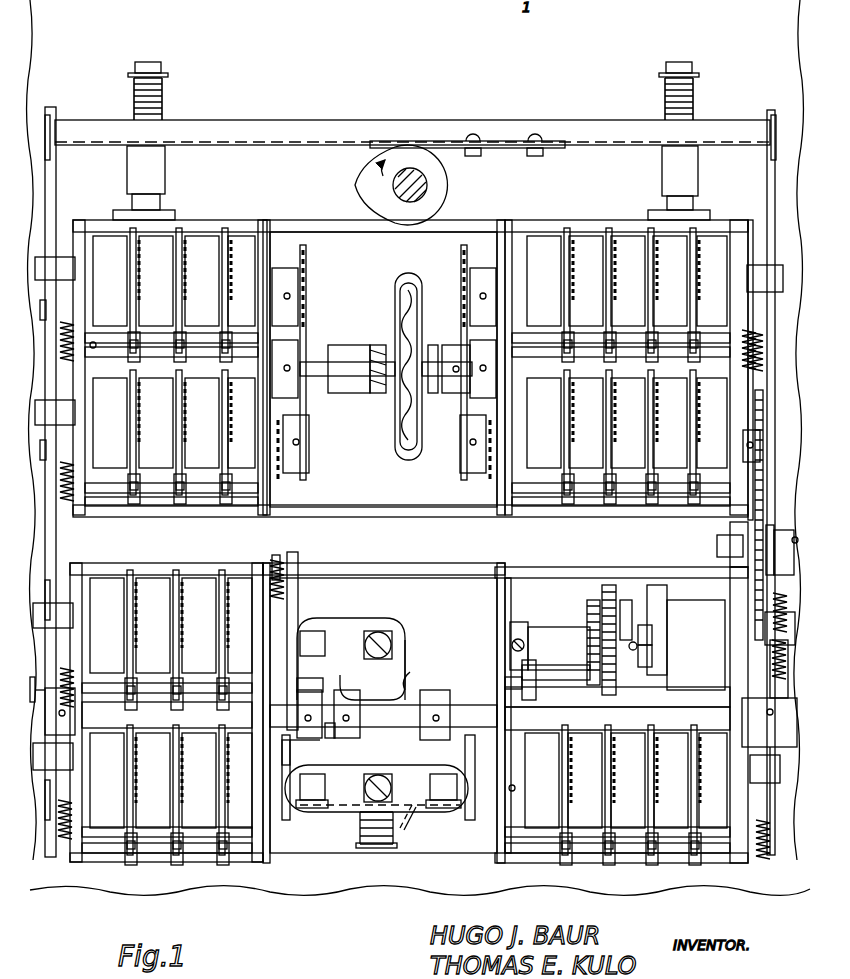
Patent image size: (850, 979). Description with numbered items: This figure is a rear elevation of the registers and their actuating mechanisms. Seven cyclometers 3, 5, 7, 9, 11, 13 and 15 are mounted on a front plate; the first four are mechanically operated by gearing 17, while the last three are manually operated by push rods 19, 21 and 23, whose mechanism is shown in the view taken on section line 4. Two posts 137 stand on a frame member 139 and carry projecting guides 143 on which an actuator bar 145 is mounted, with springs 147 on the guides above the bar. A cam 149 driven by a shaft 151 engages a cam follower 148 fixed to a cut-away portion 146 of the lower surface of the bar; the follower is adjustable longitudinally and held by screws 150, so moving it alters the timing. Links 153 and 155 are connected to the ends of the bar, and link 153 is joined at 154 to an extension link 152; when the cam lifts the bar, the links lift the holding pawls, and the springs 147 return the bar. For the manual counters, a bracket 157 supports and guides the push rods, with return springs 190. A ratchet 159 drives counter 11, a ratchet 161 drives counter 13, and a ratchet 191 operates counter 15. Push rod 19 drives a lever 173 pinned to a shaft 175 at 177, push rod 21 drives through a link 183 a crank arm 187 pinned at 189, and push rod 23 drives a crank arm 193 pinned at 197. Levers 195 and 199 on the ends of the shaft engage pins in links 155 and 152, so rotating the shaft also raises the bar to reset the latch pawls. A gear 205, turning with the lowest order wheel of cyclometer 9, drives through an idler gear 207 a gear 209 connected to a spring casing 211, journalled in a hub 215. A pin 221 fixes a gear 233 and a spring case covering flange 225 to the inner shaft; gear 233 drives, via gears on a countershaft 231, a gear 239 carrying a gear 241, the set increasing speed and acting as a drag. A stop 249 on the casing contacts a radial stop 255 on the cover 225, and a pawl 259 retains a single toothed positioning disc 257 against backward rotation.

The cyclometer 3 is at (248, 258).
The cyclometer 5 is at (246, 470).
The cyclometer 7 is at (530, 250).
The cyclometer 9 is at (500, 482).
The cyclometer 11 is at (142, 588).
The cyclometer 13 is at (155, 822).
The cyclometer 15 is at (545, 850).
The gearing 17 is at (465, 267).
The push rod 19 is at (316, 646).
The push rod 21 is at (316, 789).
The push rod 23 is at (442, 790).
The section line 4- 4 is at (413, 628).
The posts 137 is at (165, 174).
The frame member 139 is at (268, 222).
The projecting guides 143 is at (168, 104).
The actuator bar 145 is at (312, 125).
The cut-away portion 146 is at (397, 140).
The springs 147 is at (168, 85).
The cam follower 148 is at (447, 141).
The cam 149 is at (436, 181).
The screws 150 is at (478, 141).
The shaft 151 is at (426, 196).
The extension link 152 is at (791, 535).
The link 153 is at (767, 180).
The pivot connection 154 is at (808, 522).
The link 155 is at (54, 186).
The bracket 157 is at (395, 667).
The ratchet 159 is at (296, 612).
The ratchet 161 is at (290, 832).
The lever 173 is at (292, 689).
The shaft 175 is at (167, 715).
The pin 177 is at (316, 706).
The link 183 is at (301, 748).
The crank arm 187 is at (337, 725).
The pin 189 is at (354, 706).
The springs 190 is at (395, 830).
The ratchet 191 is at (464, 832).
The crank arm 193 is at (422, 677).
The lever 195 is at (45, 719).
The pin 197 is at (446, 706).
The lever 199 is at (769, 722).
The gear 205 is at (763, 406).
The idler gear 207 is at (770, 512).
The gear 209 is at (772, 645).
The spring casing 211 is at (670, 614).
The hub 215 is at (543, 635).
The pin 221 is at (633, 641).
The spring case covering flange 225 is at (653, 600).
The countershaft 231 is at (680, 692).
The gear 233 is at (618, 586).
The gear 239 is at (611, 600).
The gear 241 is at (590, 605).
The stop 249 is at (652, 633).
The radial stop 255 is at (652, 656).
The single toothed positioning disc 257 is at (508, 612).
The pawl 259 is at (508, 683).